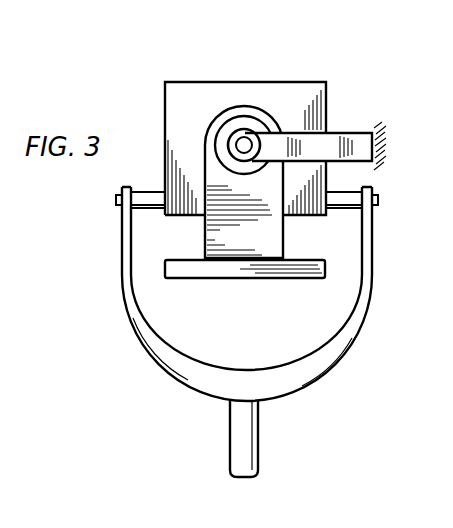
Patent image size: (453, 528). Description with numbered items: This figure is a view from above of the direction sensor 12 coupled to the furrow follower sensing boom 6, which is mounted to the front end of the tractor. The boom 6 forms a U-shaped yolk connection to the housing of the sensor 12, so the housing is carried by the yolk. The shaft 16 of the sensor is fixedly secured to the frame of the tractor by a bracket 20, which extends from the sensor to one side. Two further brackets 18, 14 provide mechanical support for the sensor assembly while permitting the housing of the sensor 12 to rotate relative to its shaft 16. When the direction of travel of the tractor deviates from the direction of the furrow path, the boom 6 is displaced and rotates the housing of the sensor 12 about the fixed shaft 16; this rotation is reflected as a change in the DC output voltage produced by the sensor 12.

The boom 6 is at (312, 381).
The sensor 12 is at (182, 96).
The bracket 14 is at (245, 272).
The shaft 16 is at (245, 143).
The bracket 18 is at (210, 230).
The bracket 20 is at (352, 145).